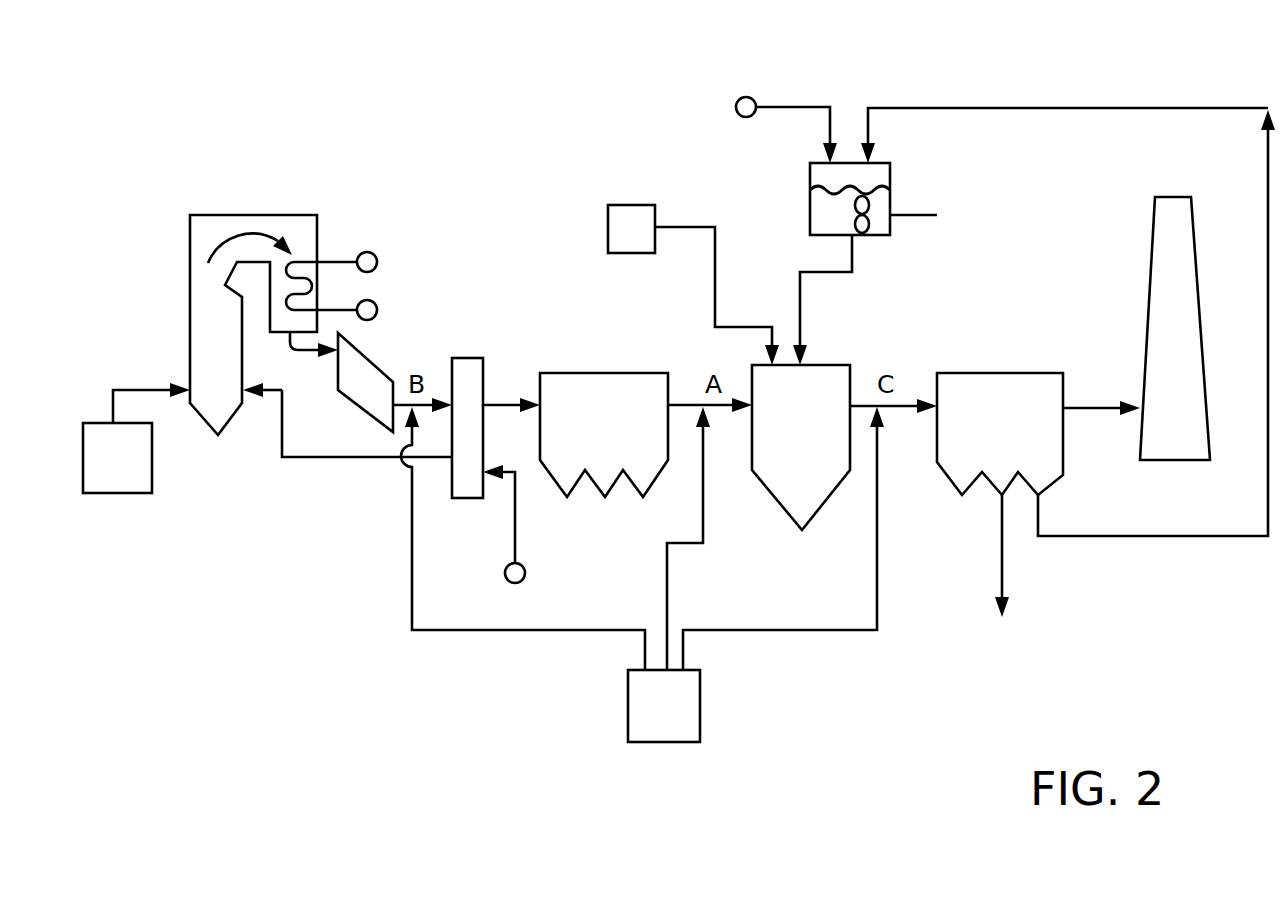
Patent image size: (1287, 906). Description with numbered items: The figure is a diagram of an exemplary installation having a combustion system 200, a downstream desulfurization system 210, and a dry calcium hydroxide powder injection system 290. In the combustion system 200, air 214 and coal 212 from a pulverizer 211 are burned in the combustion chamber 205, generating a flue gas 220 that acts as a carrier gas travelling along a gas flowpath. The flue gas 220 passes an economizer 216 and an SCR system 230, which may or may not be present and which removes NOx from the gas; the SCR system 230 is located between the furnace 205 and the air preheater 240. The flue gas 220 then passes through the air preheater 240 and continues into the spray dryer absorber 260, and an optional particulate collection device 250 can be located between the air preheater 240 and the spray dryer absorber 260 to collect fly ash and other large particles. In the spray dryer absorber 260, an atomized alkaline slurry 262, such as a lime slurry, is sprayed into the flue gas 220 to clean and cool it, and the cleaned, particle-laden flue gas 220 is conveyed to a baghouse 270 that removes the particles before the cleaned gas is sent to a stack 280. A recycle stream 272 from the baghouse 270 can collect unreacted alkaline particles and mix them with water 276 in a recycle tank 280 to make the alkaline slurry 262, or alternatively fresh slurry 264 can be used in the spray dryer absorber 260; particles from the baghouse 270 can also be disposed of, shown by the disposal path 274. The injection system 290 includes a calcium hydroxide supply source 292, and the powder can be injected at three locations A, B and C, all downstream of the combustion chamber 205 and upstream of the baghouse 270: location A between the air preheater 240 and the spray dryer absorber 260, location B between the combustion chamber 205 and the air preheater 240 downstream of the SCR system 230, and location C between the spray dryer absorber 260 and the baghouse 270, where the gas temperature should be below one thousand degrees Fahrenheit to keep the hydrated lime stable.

The combustion system 200 is at (170, 168).
The desulfurization system 210 is at (585, 168).
The combustion chamber 205 is at (212, 325).
The pulverizer 211 is at (113, 493).
The coal 212 is at (145, 390).
The air 214 is at (352, 457).
The economizer 216 is at (338, 262).
The flue gas 220 is at (227, 232).
The SCR system 230 is at (360, 352).
The air preheater 240 is at (468, 357).
The particulate collection device 250 is at (585, 432).
The spray dryer absorber 260 is at (781, 426).
The alkaline slurry 262 is at (797, 310).
The fresh slurry 264 is at (685, 227).
The baghouse 270 is at (976, 436).
The recycle stream 272 is at (1120, 536).
The particle disposal 274 is at (1000, 560).
The water 276 is at (780, 107).
The stack 280 is at (810, 198).
The dry calcium hydroxide powder injection system 290 is at (708, 765).
The calcium hydroxide supply source 292 is at (628, 697).